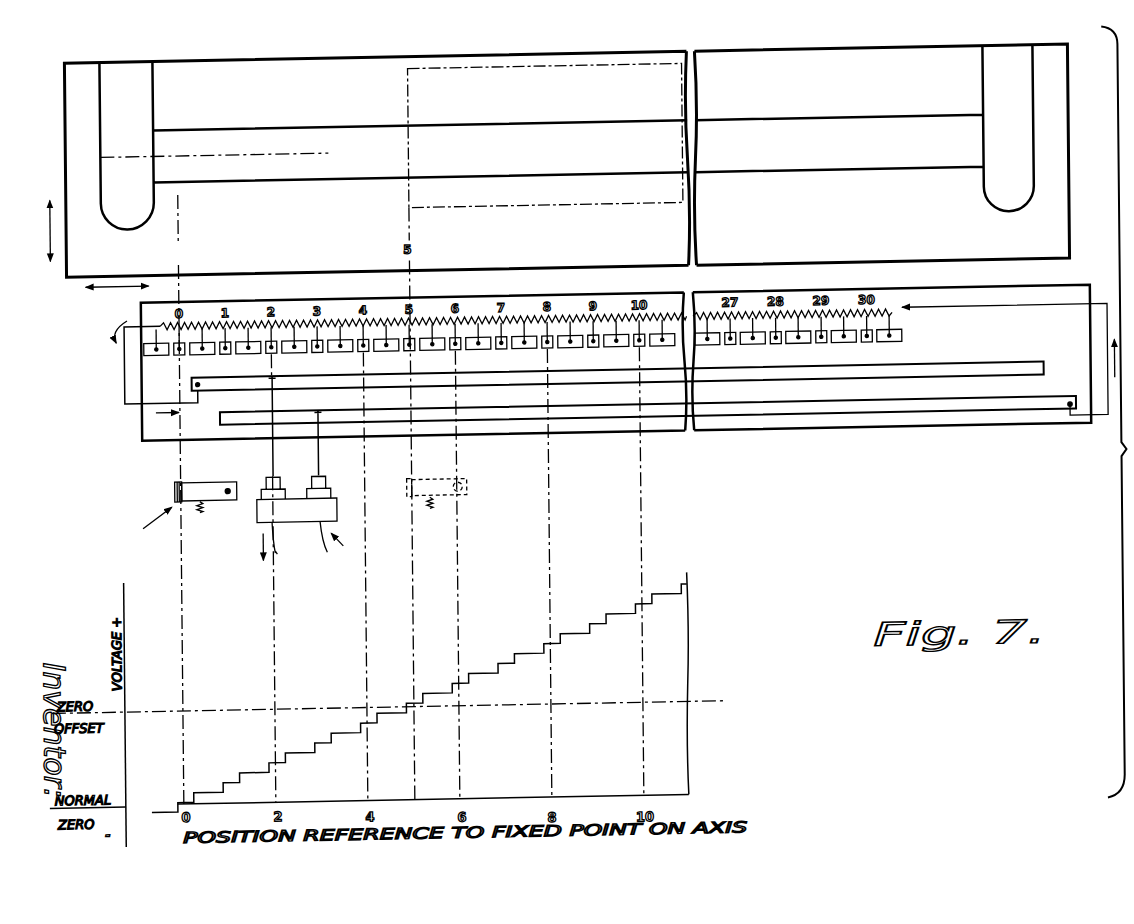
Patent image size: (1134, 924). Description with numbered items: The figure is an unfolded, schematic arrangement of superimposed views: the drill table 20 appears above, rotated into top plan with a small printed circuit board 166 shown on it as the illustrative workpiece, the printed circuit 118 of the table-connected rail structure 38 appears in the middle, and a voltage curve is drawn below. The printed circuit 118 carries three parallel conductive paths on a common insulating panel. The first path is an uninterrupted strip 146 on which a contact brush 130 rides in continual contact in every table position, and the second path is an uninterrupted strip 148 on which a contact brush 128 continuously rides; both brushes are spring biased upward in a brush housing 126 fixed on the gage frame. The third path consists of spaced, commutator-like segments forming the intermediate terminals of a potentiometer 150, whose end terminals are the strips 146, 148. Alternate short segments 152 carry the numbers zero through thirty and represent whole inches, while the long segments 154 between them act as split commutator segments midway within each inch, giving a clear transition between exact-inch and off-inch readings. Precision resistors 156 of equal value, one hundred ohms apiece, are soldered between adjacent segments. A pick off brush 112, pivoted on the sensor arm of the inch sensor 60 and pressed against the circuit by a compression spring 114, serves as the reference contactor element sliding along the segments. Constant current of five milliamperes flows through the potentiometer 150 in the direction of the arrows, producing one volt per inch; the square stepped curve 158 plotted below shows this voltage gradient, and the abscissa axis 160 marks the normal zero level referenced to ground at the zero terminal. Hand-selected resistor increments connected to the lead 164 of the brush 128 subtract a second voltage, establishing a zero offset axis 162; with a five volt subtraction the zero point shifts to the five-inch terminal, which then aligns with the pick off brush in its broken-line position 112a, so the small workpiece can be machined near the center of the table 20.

The table 20 is at (79, 176).
The printed circuit board 166 is at (409, 196).
The precision resistors 156 is at (884, 324).
The short segments 152 is at (177, 356).
The long segments 154 is at (205, 357).
The rail structure 38 is at (122, 310).
The printed circuit 118 is at (140, 427).
The second uninterrupted strip 148 is at (780, 392).
The first uninterrupted strip 146 is at (714, 427).
The potentiometer 150 is at (908, 337).
The contact brush 128 is at (268, 478).
The contact brush 130 is at (350, 458).
The brush housing 126 is at (336, 508).
The lead 164 is at (275, 555).
The pick off brush 112 is at (181, 479).
The compression spring 114 is at (207, 512).
The inch sensor 60 is at (143, 523).
The broken line position of pick off brush 112a is at (410, 482).
The square stepped curve 158 is at (528, 660).
The abscissa axis 160 is at (398, 791).
The zero offset axis 162 is at (163, 710).